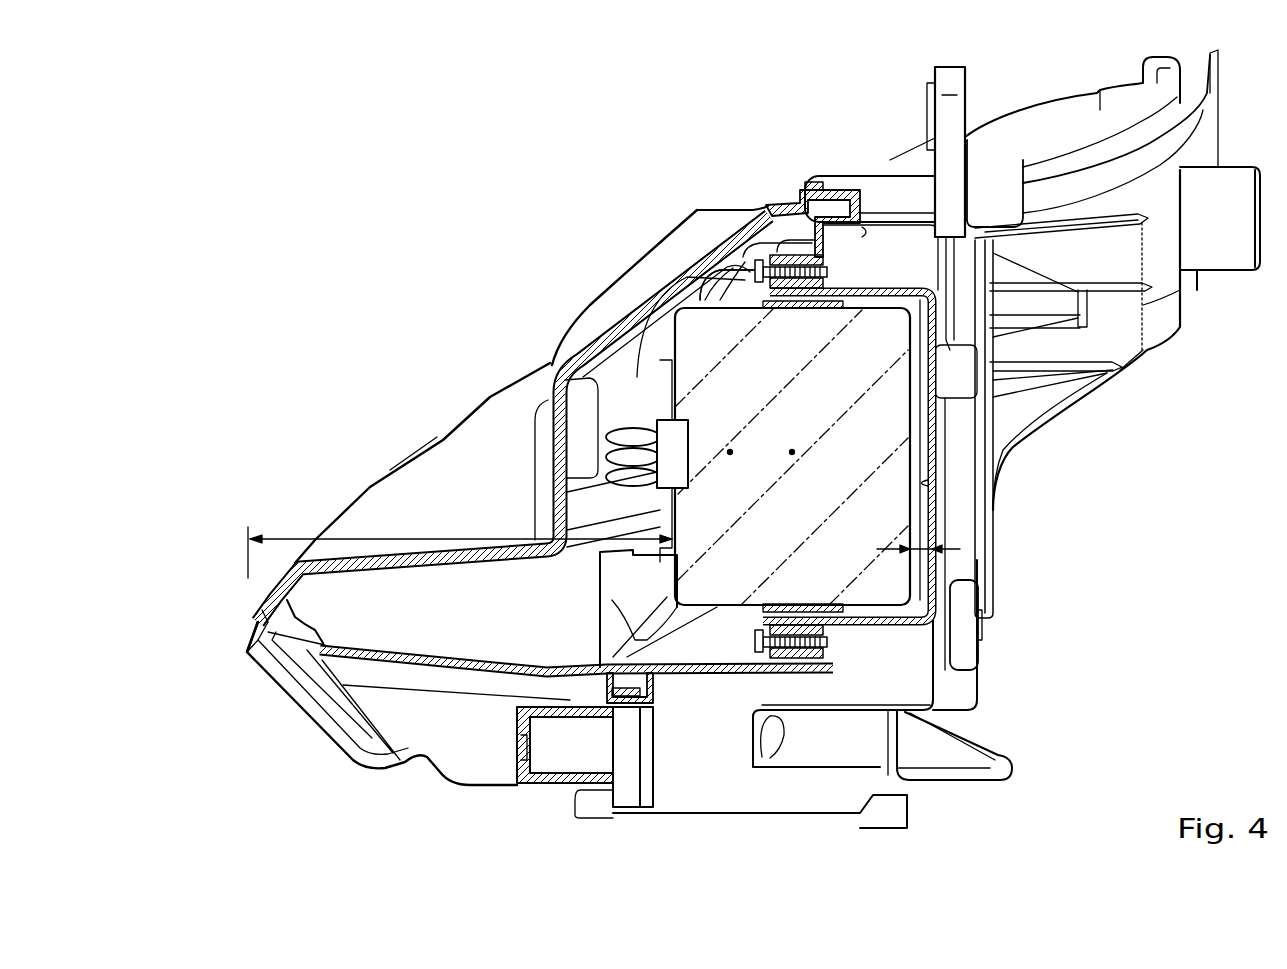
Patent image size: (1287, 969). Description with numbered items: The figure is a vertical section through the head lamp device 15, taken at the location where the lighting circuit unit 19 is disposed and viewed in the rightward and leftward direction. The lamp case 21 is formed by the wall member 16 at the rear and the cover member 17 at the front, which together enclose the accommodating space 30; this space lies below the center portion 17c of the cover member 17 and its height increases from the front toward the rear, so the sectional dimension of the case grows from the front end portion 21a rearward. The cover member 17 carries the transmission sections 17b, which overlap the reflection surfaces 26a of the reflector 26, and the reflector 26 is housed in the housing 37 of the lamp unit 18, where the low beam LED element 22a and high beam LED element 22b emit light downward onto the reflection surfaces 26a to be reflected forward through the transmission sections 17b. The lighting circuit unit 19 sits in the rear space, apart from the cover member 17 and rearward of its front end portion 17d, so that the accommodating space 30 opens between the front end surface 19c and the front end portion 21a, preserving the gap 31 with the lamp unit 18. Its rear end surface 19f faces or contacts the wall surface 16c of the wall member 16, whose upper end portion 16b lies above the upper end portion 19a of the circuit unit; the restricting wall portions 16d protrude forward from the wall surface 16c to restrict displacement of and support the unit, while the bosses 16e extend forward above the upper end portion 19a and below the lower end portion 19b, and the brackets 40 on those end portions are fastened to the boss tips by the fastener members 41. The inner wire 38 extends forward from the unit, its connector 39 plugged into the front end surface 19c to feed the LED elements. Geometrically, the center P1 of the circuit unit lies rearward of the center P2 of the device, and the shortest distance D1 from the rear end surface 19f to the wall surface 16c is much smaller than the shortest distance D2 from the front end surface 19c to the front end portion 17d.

The head lamp device 15 is at (352, 116).
The wall member 16 is at (853, 173).
The upper end portion of the wall member 16b is at (805, 178).
The wall surface 16c is at (940, 483).
The restricting wall portion 16d is at (913, 617).
The boss 16e is at (792, 673).
The cover member 17 is at (788, 205).
The transmission section 17b is at (437, 437).
The center portion of the cover member 17c is at (593, 380).
The front end portion of the cover member 17d is at (247, 650).
The lamp unit 18 is at (602, 340).
The lighting circuit unit 19 is at (667, 355).
The upper end portion of the lighting circuit unit 19a is at (738, 265).
The lower end portion of the lighting circuit unit 19b is at (977, 673).
The front end surface of the lighting circuit unit 19c is at (660, 507).
The rear end surface of the lighting circuit unit 19f is at (993, 387).
The lamp case 21 is at (972, 73).
The front end portion of the lamp case 21a is at (250, 652).
The low beam LED element 22a is at (735, 398).
The high beam LED element 22b is at (486, 585).
The reflector 26 is at (600, 577).
The reflection surface 26a is at (610, 597).
The accommodating space 30 is at (730, 265).
The gap 31 is at (625, 318).
The housing 37 is at (366, 513).
The inner wire 38 is at (629, 424).
The connector 39 is at (678, 413).
The bracket 40 is at (767, 213).
The fastener member 41 is at (760, 300).
The center of the lighting circuit unit P1 is at (795, 452).
The center of the head lamp device P2 is at (733, 452).
The shortest distance between rear end surface and wall surface D1 is at (935, 540).
The shortest distance between front end surface and front end portion D2 is at (460, 544).